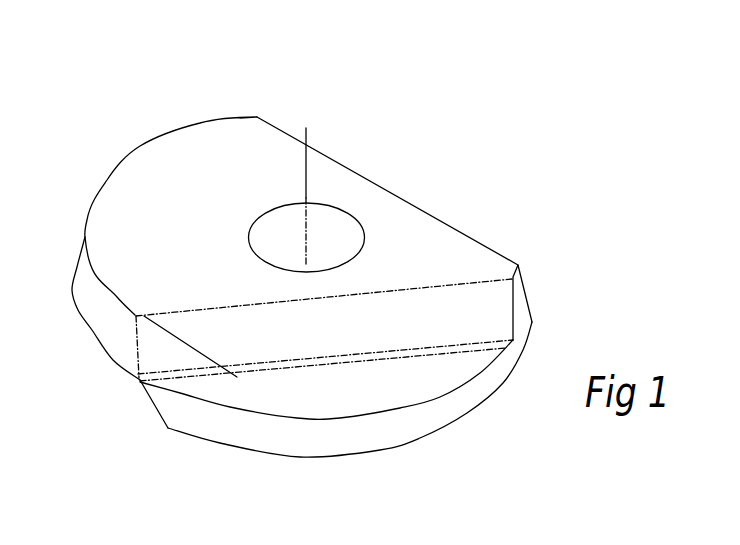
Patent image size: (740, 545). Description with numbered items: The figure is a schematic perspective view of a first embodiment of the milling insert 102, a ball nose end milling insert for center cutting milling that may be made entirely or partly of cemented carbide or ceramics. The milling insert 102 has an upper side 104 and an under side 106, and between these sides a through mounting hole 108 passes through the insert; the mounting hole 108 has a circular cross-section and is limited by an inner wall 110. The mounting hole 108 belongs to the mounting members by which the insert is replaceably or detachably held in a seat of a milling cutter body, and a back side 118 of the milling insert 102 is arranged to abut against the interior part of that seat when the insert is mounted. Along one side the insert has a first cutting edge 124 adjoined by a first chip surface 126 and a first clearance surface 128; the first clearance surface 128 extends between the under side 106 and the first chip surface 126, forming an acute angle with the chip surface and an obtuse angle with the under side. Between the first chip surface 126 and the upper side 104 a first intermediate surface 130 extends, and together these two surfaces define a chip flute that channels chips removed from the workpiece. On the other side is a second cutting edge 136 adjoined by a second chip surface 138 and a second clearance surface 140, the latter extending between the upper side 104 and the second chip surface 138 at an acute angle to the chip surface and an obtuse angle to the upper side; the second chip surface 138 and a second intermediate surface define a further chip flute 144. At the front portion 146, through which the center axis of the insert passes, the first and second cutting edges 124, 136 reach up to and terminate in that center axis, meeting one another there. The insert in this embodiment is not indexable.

The milling insert 102 is at (93, 138).
The upper side 104 is at (203, 157).
The under side 106 is at (208, 447).
The mounting hole 108 is at (323, 237).
The inner wall 110 is at (250, 244).
The back side 118 is at (388, 188).
The first cutting edge 124 is at (328, 418).
The first chip surface 126 is at (437, 372).
The first clearance surface 128 is at (287, 438).
The first intermediate surface 130 is at (478, 311).
The second cutting edge 136 is at (88, 338).
The second chip surface 138 is at (118, 363).
The second clearance surface 140 is at (95, 305).
The chip flute 144 is at (138, 392).
The front portion 146 is at (155, 427).